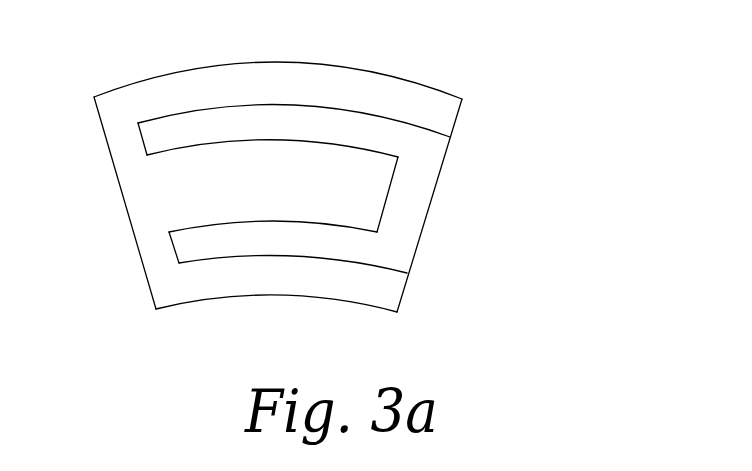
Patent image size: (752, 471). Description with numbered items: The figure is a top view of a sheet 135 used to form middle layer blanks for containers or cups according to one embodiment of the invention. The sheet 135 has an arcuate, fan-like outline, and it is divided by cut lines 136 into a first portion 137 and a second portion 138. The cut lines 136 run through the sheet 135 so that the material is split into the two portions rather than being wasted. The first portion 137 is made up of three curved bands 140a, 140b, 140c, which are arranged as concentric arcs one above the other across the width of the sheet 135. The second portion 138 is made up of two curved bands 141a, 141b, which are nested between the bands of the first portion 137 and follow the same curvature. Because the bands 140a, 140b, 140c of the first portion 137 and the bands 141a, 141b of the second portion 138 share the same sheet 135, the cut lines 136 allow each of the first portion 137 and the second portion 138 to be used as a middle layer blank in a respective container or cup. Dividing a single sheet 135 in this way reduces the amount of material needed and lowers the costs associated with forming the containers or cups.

The sheet 135 is at (592, 122).
The cut lines 136 is at (350, 147).
The first portion 137 is at (118, 156).
The second portion 138 is at (407, 245).
The band 140a is at (452, 115).
The band 140b is at (380, 171).
The band 140c is at (393, 292).
The band 141a is at (186, 122).
The band 141b is at (186, 246).